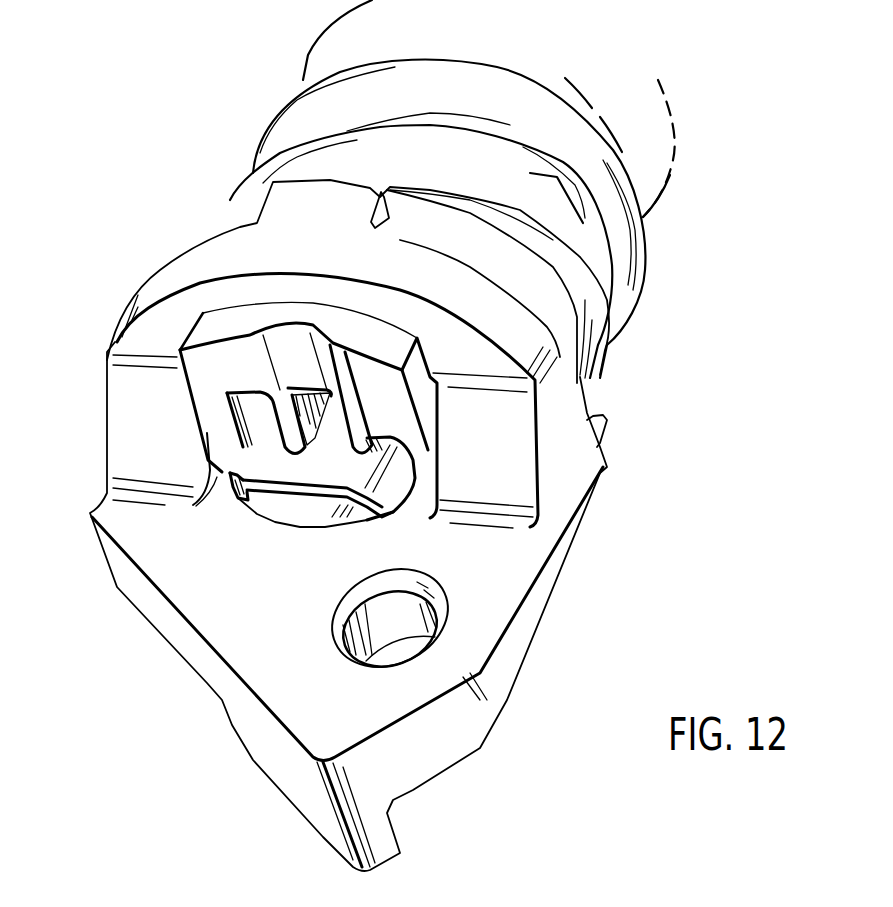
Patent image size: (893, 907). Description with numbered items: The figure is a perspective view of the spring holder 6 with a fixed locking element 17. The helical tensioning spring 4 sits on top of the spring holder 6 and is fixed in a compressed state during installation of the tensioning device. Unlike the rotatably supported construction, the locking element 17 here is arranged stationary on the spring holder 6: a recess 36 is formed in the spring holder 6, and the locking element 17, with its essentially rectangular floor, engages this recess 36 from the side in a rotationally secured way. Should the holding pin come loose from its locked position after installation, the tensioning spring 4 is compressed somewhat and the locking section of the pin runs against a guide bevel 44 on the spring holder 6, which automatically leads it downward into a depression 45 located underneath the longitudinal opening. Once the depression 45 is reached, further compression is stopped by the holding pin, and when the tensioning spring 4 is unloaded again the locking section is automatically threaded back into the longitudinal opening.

The tensioning spring 4 is at (625, 252).
The spring holder 6 is at (205, 657).
The locking element 17 is at (200, 313).
The recess 36 is at (208, 472).
The guide bevel 44 is at (256, 516).
The depression 45 is at (308, 526).